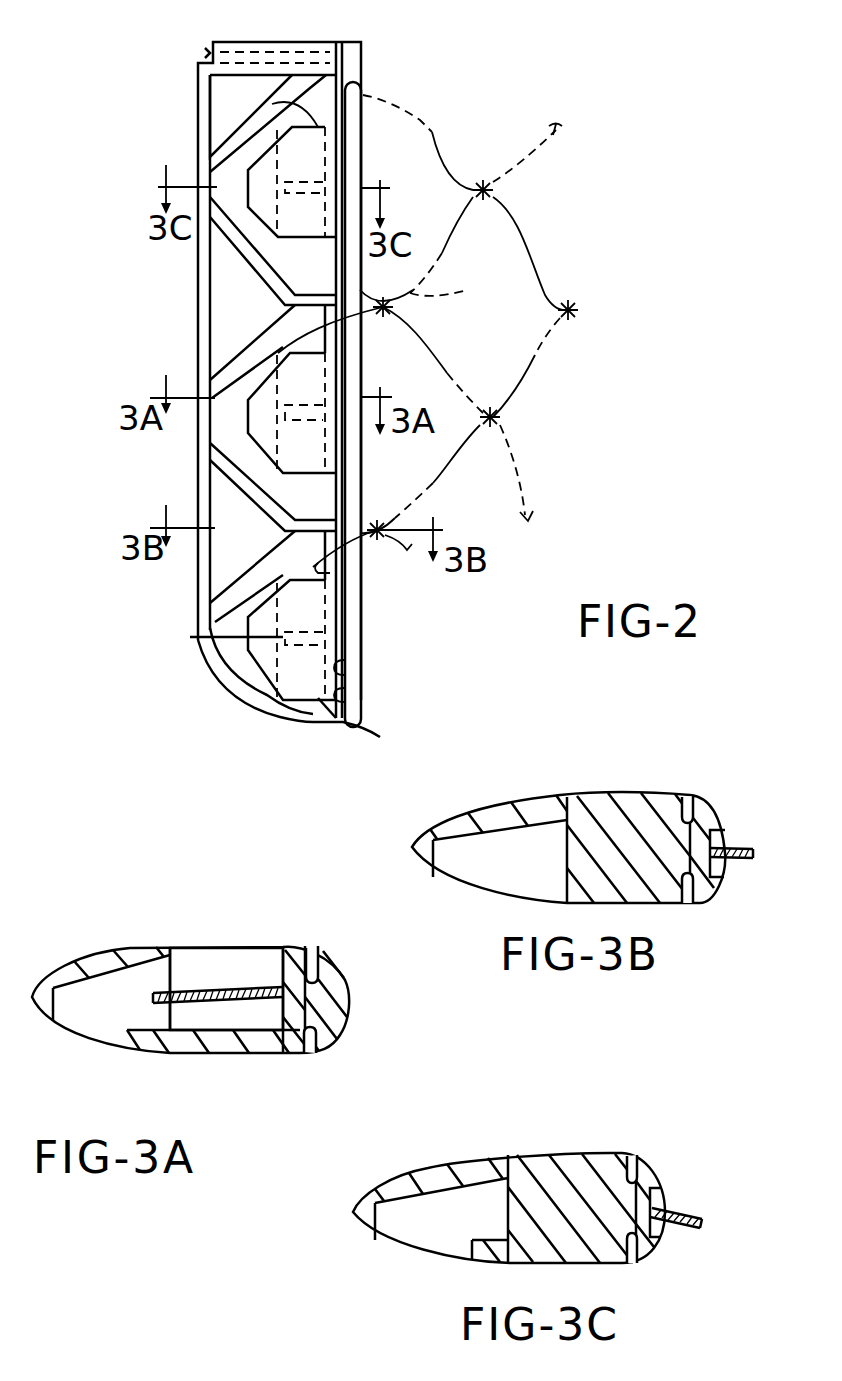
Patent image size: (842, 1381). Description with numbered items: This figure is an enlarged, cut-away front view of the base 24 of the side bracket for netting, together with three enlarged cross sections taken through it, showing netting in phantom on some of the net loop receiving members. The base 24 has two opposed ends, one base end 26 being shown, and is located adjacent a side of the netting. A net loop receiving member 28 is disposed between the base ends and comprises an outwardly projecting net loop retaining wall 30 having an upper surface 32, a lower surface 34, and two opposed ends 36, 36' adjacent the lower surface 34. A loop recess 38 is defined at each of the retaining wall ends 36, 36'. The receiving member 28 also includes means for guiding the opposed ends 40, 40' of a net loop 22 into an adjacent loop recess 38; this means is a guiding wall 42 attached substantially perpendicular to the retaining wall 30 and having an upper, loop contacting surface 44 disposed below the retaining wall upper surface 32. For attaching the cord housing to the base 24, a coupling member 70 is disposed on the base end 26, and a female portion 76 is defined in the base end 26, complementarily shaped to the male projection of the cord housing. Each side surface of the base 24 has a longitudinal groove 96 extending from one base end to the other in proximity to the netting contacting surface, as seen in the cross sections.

In FIG. 3A, the net loop 22 is at (237, 987).
In FIG. 3B, the net loop 22 is at (730, 843).
In FIG. 3C, the net loop 22 is at (690, 1207).
In FIG. 2, the base 24 is at (152, 145).
In FIG. 2, the base end 26 is at (240, 50).
In FIG. 2, the net loop receiving member 28 is at (364, 643).
In FIG. 2, the net loop retaining wall 30 is at (251, 403).
In FIG. 3A, the net loop retaining wall 30 is at (207, 1053).
In FIG. 2, the upper surface 32 is at (253, 622).
In FIG. 3A, the upper surface 32 is at (130, 1029).
In FIG. 2, the lower surface 34 is at (360, 693).
In FIG. 2, the retaining wall end 36 is at (289, 610).
In FIG. 2, the retaining wall end 36' is at (326, 347).
In FIG. 2, the loop recess 38 is at (360, 507).
In FIG. 2, the net loop end 40 is at (423, 346).
In FIG. 2, the net loop end 40' is at (403, 83).
In FIG. 2, the guiding wall 42 is at (237, 687).
In FIG. 3A, the guiding wall 42 is at (193, 953).
In FIG. 2, the loop contacting surface 44 is at (190, 637).
In FIG. 3A, the loop contacting surface 44 is at (167, 980).
In FIG. 2, the coupling member 70 is at (196, 55).
In FIG. 2, the female portion 76 is at (228, 33).
In FIG. 2, the longitudinal groove 96 is at (362, 663).
In FIG. 3A, the longitudinal groove 96 is at (313, 972).
In FIG. 3B, the longitudinal groove 96 is at (683, 817).
In FIG. 3C, the longitudinal groove 96 is at (630, 1167).